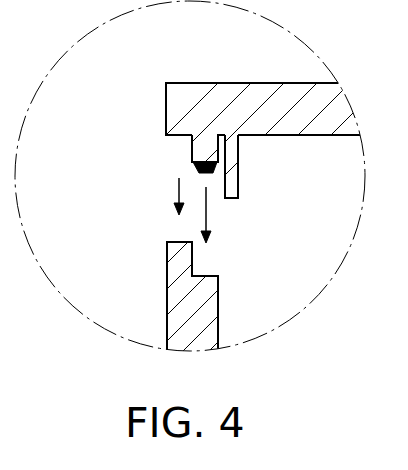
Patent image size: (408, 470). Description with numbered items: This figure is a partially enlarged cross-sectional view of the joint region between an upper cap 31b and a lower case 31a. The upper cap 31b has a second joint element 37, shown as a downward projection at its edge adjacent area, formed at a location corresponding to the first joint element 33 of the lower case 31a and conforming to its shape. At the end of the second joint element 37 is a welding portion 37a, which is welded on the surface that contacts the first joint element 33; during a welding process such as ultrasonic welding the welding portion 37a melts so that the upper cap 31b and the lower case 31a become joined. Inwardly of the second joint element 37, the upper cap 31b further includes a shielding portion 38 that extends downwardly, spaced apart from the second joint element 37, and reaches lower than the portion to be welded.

The upper cap 31b is at (226, 97).
The second joint element 37 is at (192, 150).
The welding portion 37a is at (197, 170).
The shielding portion 38 is at (238, 160).
The lower case 31a is at (177, 281).
The first joint element 33 is at (194, 260).